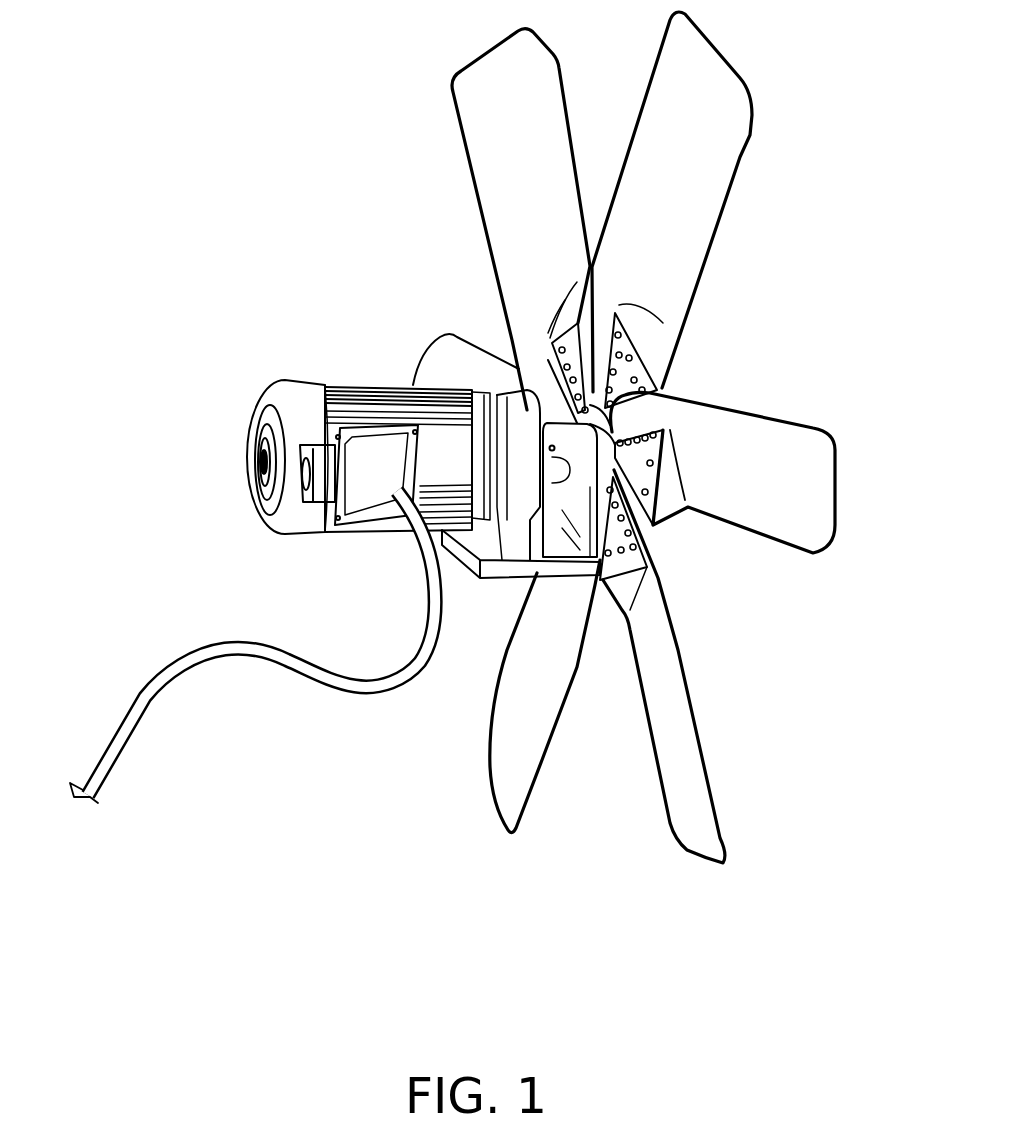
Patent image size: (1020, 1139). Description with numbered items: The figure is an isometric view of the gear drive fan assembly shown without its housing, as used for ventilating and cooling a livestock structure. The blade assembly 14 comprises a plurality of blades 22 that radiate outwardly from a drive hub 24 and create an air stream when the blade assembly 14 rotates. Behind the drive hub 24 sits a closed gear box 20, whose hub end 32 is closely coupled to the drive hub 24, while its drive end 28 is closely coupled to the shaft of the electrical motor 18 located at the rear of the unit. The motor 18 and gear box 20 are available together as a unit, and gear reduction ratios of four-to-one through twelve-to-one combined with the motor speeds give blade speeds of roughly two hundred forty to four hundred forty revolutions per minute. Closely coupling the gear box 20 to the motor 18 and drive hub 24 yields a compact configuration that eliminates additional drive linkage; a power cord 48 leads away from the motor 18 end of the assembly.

The blade assembly 14 is at (658, 437).
The electrical motor 18 is at (357, 385).
The gear box 20 is at (510, 503).
The blades 22 is at (750, 153).
The drive hub 24 is at (665, 385).
The drive end 28 is at (465, 388).
The hub end 32 is at (653, 455).
The power cord 48 is at (130, 744).